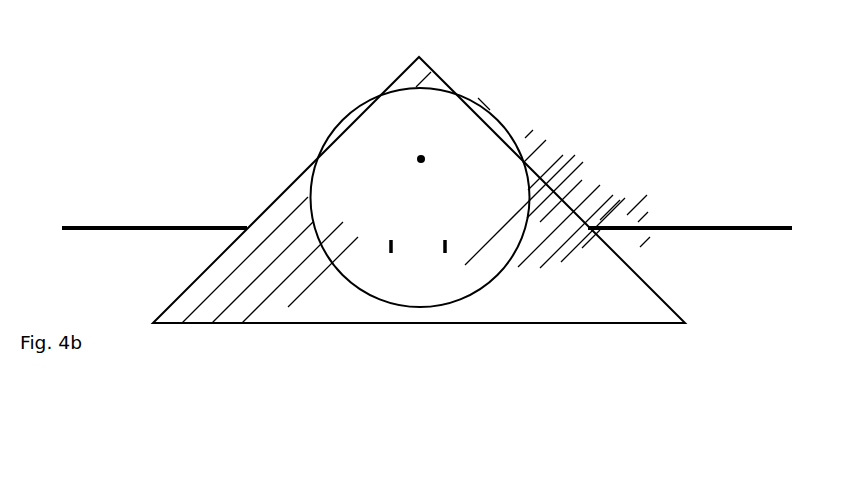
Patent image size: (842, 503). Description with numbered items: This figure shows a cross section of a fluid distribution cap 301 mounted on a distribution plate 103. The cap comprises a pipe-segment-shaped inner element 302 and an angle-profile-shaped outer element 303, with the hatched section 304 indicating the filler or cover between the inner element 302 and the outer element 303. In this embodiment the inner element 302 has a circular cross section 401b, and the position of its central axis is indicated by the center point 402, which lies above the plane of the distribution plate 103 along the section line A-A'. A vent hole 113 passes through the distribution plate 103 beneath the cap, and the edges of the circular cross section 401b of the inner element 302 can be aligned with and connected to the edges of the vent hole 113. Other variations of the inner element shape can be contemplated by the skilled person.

The distribution plate 103 is at (703, 230).
The fluid distribution cap 301 is at (265, 153).
The inner element 302 is at (455, 89).
The outer element 303 is at (573, 172).
The hatched section 304 is at (598, 255).
The circular cross section 401b is at (270, 260).
The vent hole 113 is at (420, 233).
The center point 402 is at (428, 165).